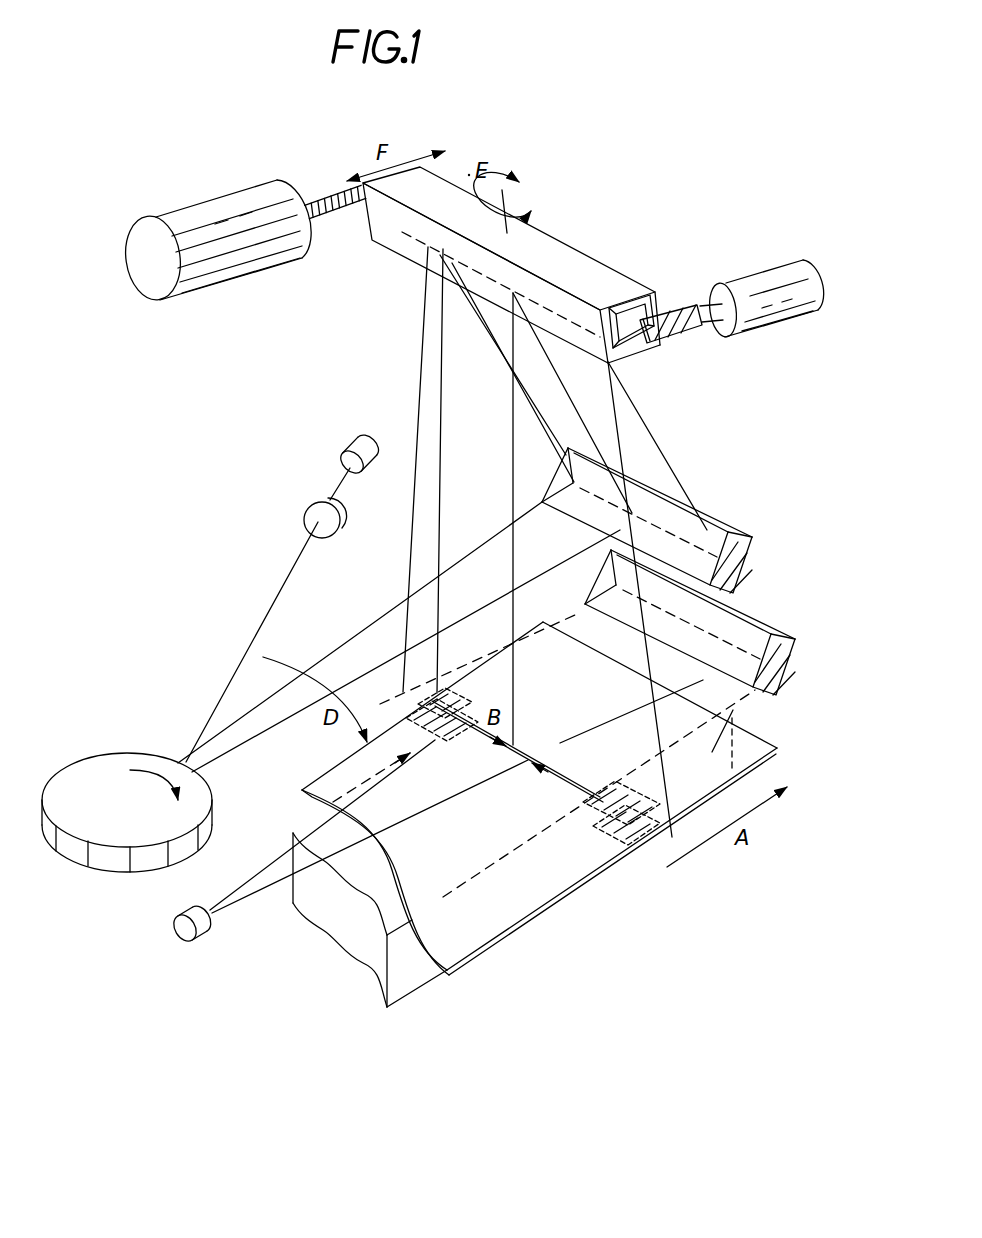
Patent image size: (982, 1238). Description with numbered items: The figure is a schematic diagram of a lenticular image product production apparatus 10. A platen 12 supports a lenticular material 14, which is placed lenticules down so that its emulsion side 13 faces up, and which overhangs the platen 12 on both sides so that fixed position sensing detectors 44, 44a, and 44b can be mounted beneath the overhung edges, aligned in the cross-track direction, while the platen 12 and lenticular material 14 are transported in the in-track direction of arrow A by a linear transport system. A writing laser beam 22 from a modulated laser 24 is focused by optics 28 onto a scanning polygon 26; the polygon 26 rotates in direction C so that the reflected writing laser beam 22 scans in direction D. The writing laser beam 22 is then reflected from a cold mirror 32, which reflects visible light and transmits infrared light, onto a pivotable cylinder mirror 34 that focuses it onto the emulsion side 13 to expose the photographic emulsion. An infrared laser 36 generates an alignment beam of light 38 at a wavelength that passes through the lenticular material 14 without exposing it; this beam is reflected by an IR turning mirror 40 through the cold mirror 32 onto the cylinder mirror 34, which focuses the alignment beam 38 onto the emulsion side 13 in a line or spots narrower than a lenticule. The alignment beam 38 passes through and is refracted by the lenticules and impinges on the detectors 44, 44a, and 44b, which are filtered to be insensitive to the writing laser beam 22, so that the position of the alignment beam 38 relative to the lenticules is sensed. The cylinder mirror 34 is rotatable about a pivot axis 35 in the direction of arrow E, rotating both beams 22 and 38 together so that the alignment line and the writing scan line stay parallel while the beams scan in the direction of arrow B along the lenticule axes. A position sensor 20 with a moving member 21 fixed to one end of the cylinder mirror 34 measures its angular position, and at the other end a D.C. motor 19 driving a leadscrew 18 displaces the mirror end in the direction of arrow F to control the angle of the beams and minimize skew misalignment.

The lenticular image product production apparatus 10 is at (207, 420).
The platen 12 is at (420, 973).
The emulsion side 13 is at (733, 710).
The lenticular material 14 is at (587, 863).
The leadscrew 18 is at (337, 193).
The D.C. motor 19 is at (226, 200).
The position sensor 20 is at (787, 303).
The moving member 21 is at (680, 327).
The writing laser beam 22 is at (219, 694).
The modulated laser 24 is at (358, 448).
The scanning polygon 26 is at (88, 765).
The optics 28 is at (305, 518).
The cold mirror 32 is at (705, 527).
The pivotable cylinder mirror 34 is at (553, 252).
The pivot axis 35 is at (507, 198).
The infrared laser 36 is at (177, 937).
The alignment beam of light 38 is at (257, 873).
The IR turning mirror 40 is at (755, 640).
The fixed position sensing detector 44 is at (501, 768).
The fixed position sensing detector 44a is at (397, 720).
The fixed position sensing detector 44b is at (585, 818).